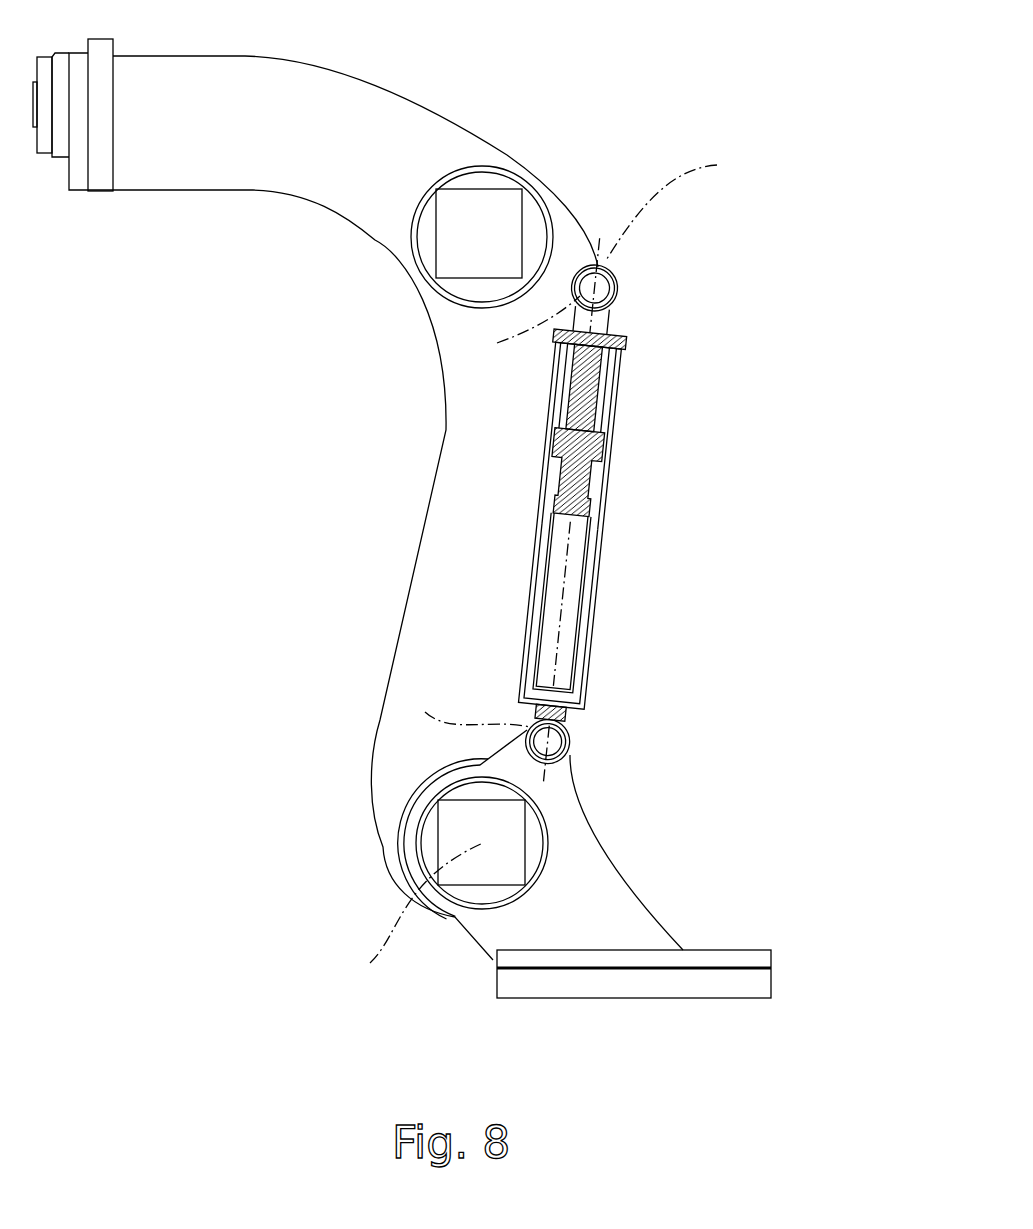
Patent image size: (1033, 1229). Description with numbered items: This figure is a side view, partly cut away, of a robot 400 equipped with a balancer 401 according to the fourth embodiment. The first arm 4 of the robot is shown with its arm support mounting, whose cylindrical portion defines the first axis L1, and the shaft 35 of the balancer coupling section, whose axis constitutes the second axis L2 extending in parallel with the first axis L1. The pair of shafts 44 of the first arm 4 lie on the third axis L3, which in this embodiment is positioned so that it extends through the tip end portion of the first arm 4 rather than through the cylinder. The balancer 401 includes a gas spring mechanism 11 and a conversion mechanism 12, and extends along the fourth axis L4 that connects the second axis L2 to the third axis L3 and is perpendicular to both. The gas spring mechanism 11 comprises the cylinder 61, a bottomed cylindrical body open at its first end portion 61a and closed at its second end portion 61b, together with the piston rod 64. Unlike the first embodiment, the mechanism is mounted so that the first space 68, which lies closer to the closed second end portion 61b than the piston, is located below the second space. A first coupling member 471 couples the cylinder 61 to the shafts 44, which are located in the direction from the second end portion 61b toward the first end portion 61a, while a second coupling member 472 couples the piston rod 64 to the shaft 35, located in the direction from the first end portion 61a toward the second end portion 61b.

The robot 400 is at (640, 137).
The first arm 4 is at (447, 573).
The balancer 401 is at (605, 541).
The shafts 44 is at (617, 275).
The first coupling member 471 is at (615, 317).
The piston rod 64 is at (603, 383).
The cylinder 61 is at (597, 577).
The first end portion 61a is at (593, 462).
The first space 68 is at (565, 630).
The second end portion 61b is at (568, 700).
The second coupling member 472 is at (568, 748).
The shaft 35 is at (567, 722).
The conversion mechanism 12 is at (540, 492).
The gas spring mechanism 11 is at (528, 611).
The fourth axis L4 is at (676, 208).
The third axis L3 is at (521, 327).
The second axis L2 is at (462, 712).
The first axis L1 is at (410, 912).